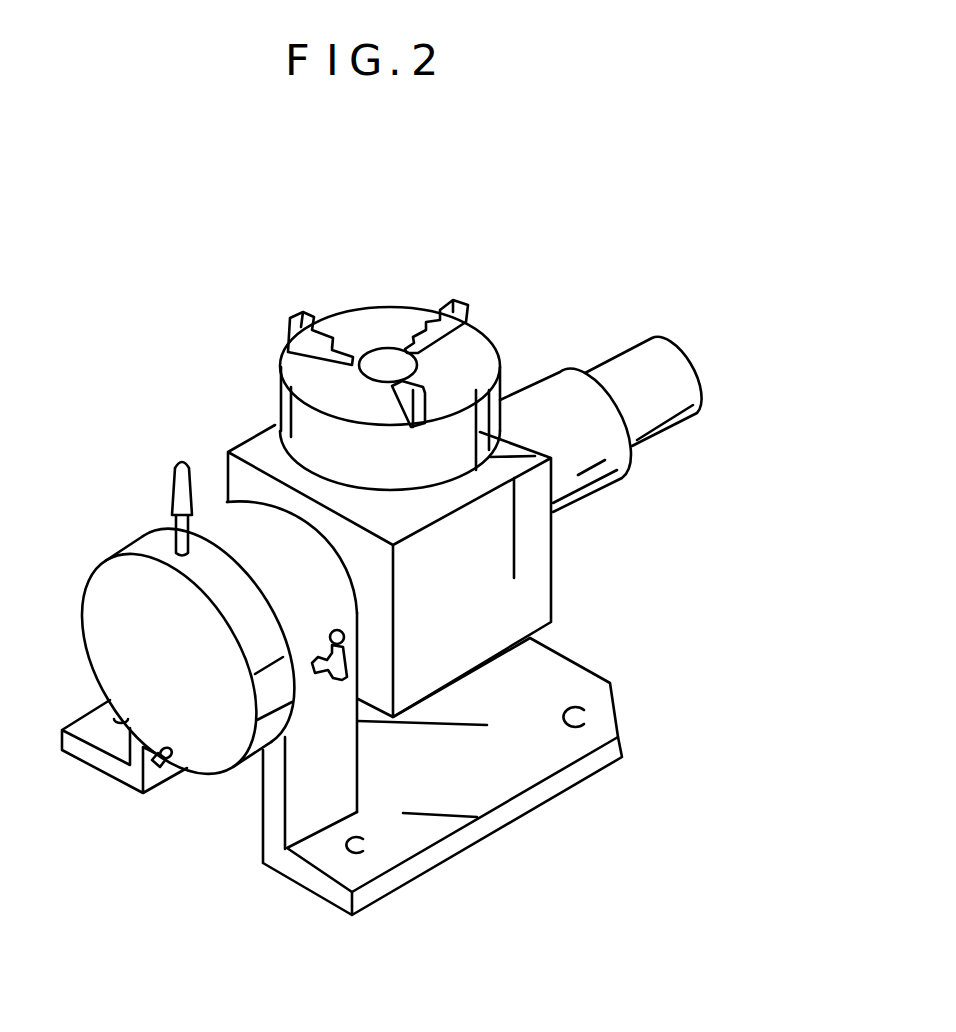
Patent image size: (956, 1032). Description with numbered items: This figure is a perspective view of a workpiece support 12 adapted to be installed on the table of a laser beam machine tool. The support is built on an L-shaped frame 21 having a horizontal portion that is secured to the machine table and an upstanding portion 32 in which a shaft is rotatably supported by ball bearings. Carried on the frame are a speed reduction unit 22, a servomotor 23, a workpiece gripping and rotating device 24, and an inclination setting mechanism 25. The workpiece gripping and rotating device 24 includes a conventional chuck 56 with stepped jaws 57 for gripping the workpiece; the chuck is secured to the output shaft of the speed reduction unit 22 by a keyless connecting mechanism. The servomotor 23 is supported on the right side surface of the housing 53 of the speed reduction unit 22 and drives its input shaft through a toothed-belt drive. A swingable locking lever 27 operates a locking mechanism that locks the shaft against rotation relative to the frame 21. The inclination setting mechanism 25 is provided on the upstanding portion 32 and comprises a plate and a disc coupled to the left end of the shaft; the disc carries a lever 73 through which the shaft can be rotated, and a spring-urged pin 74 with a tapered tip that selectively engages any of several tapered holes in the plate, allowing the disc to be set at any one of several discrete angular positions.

The workpiece support 12 is at (214, 403).
The frame 21 is at (468, 847).
The speed reduction unit 22 is at (562, 537).
The servomotor 23 is at (527, 374).
The workpiece gripping and rotating device 24 is at (340, 306).
The inclination setting mechanism 25 is at (90, 667).
The swingable locking lever 27 is at (318, 682).
The upstanding portion 32 is at (262, 786).
The housing 53 is at (565, 610).
The chuck 56 is at (281, 400).
The stepped jaws 57 is at (296, 316).
The lever 73 is at (170, 498).
The pin 74 is at (153, 768).